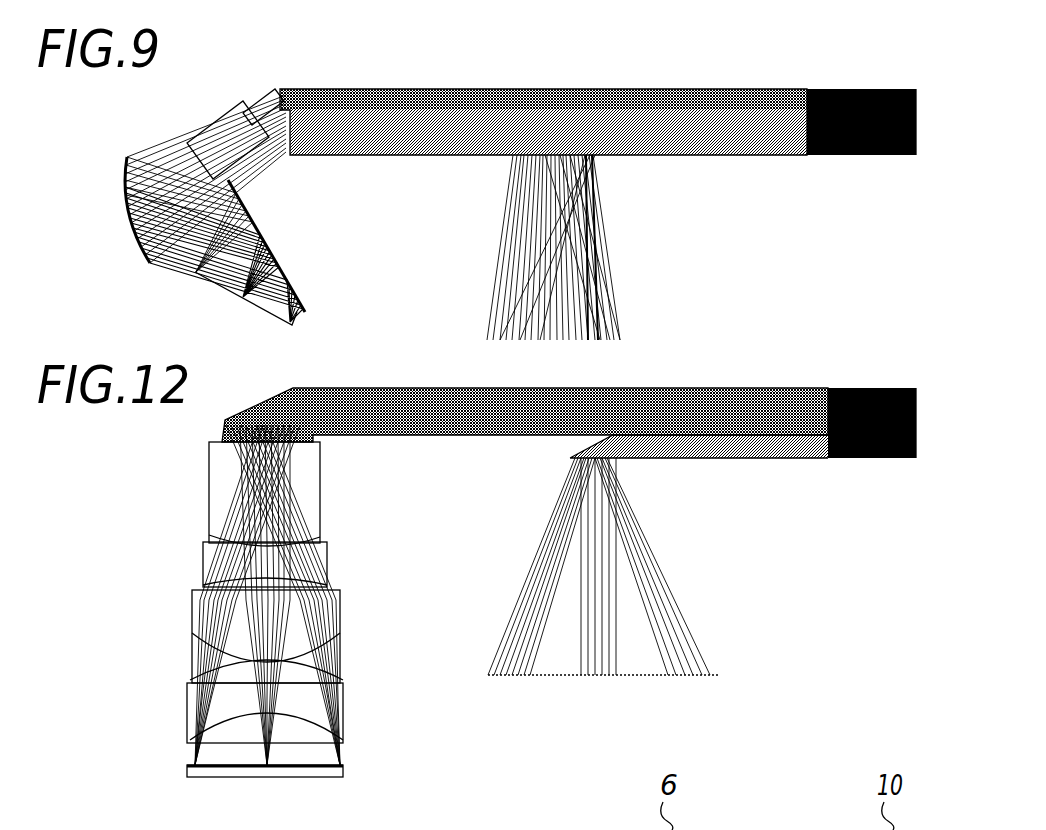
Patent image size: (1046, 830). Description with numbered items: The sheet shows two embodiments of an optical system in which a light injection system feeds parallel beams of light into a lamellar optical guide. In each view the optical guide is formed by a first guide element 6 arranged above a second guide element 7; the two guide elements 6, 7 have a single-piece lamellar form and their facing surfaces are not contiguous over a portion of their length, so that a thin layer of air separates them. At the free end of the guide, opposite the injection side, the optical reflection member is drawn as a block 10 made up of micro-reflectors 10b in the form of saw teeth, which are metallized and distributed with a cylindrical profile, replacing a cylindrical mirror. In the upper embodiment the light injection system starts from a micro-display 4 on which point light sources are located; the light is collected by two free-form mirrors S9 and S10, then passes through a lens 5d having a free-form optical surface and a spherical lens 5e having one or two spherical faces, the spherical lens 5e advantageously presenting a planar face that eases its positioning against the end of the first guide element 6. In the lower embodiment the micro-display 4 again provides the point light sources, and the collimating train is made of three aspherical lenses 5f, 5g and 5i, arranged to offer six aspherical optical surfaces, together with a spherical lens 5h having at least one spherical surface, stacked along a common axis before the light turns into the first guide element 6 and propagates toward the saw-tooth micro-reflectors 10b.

In FIG. 9, the micro-display 4 is at (247, 305).
In FIG. 12, the micro-display 4 is at (290, 778).
In FIG. 9, the lens having a free-form optical surface 5d is at (203, 117).
In FIG. 9, the spherical lens 5e is at (248, 85).
In FIG. 12, the aspherical lens 5f is at (344, 718).
In FIG. 12, the aspherical lens 5g is at (342, 598).
In FIG. 12, the spherical lens 5h is at (329, 554).
In FIG. 12, the aspherical lens 5i is at (322, 466).
In FIG. 9, the first guide element 6 is at (641, 86).
In FIG. 12, the first guide element 6 is at (671, 384).
In FIG. 9, the second guide element 7 is at (689, 162).
In FIG. 12, the second guide element 7 is at (766, 465).
In FIG. 9, the light source 10 is at (893, 86).
In FIG. 12, the light source 10 is at (893, 384).
In FIG. 9, the micro-reflectors in the form of saw teeth 10b is at (916, 141).
In FIG. 12, the micro-reflectors in the form of saw teeth 10b is at (916, 453).
In FIG. 9, the free-form mirror S9 is at (260, 213).
In FIG. 9, the free-form mirror S10 is at (125, 193).